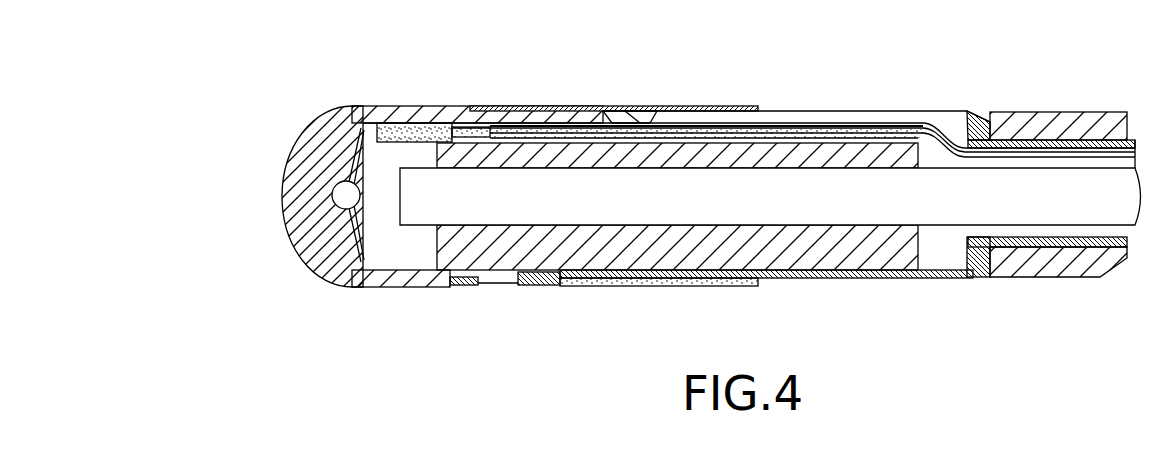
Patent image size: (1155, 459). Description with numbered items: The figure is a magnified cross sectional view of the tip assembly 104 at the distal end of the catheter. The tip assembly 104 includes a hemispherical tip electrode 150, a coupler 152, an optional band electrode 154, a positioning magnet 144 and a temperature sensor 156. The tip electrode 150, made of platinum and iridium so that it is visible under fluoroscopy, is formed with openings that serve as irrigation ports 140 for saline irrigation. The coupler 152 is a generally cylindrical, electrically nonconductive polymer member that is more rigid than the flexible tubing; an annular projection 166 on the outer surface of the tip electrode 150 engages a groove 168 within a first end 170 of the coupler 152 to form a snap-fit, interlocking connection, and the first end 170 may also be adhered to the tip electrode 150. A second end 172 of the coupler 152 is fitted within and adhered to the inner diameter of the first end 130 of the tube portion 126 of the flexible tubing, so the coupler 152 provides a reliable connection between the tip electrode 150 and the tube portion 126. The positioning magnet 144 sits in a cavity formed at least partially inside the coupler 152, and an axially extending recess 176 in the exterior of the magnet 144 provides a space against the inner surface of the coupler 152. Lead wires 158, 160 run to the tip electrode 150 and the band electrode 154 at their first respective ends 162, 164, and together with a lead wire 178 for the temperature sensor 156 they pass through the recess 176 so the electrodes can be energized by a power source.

The tip assembly 104 is at (700, 87).
The tube portion 126 is at (1088, 108).
The first end of tube portion 130 is at (987, 120).
The irrigation ports 140 is at (347, 194).
The positioning magnet 144 is at (907, 153).
The tip electrode 150 is at (282, 225).
The coupler 152 is at (587, 286).
The band electrode 154 is at (747, 107).
The temperature sensor 156 is at (406, 131).
The lead wire 158 is at (553, 133).
The lead wire 160 is at (860, 124).
The first end of lead wire 162 is at (503, 128).
The first end of lead wire 164 is at (623, 118).
The annular projection 166 is at (490, 276).
The groove 168 is at (535, 273).
The first end of coupler 170 is at (467, 287).
The second end of coupler 172 is at (1038, 250).
The recess 176 is at (800, 138).
The lead wire 178 is at (470, 130).